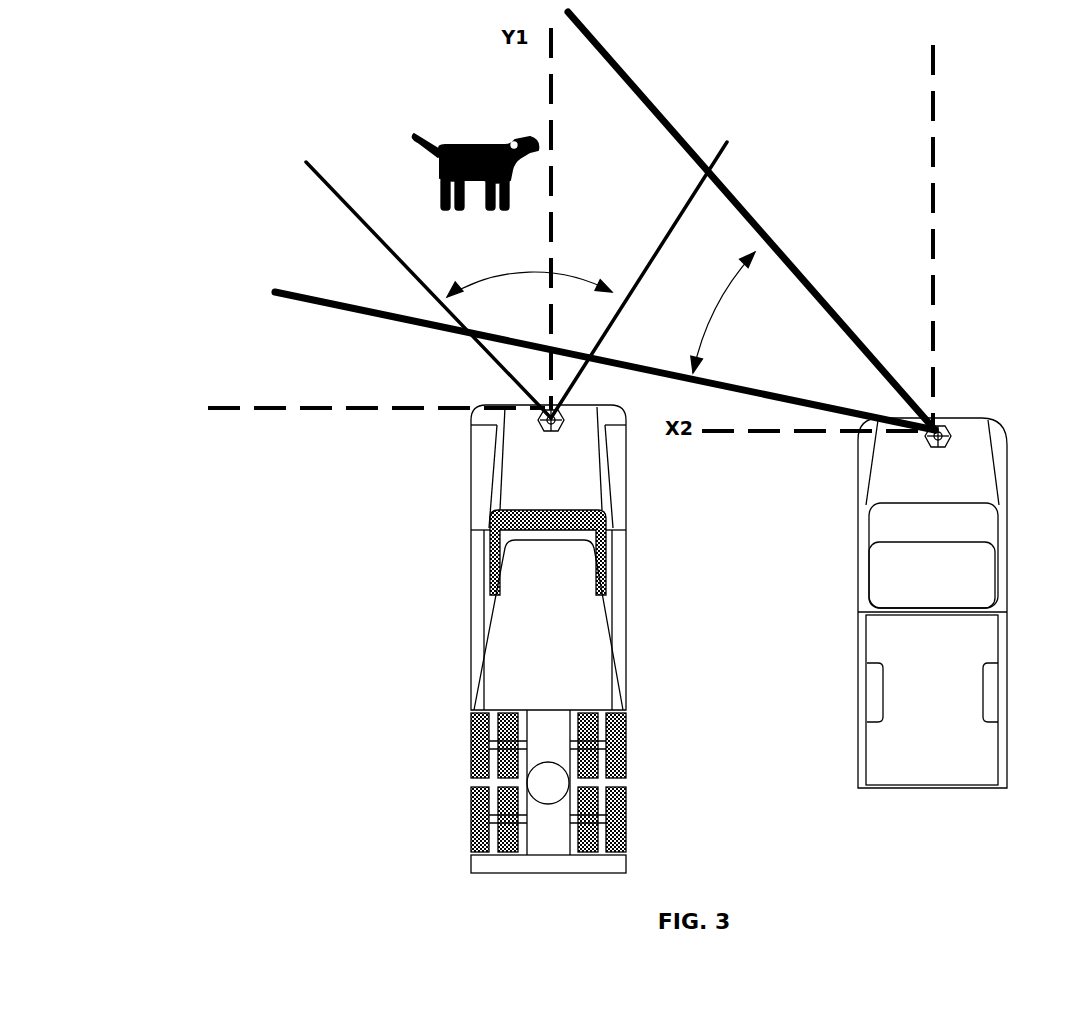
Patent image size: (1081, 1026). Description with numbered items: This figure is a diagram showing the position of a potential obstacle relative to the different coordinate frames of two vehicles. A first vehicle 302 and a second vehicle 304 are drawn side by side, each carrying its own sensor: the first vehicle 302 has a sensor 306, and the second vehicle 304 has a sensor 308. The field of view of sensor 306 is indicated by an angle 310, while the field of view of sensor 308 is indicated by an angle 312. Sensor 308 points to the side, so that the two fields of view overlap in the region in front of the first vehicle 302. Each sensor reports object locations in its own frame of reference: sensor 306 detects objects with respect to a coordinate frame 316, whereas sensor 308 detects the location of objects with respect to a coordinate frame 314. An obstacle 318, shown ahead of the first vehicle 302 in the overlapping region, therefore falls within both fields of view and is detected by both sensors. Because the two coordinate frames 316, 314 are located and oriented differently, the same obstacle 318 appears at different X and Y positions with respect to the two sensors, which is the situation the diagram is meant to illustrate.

The first vehicle 302 is at (500, 658).
The second vehicle 304 is at (890, 651).
The sensor 306 is at (540, 437).
The sensor 308 is at (932, 445).
The angle 310 is at (578, 260).
The angle 312 is at (703, 287).
The coordinate frame 314 is at (935, 290).
The coordinate frame 316 is at (315, 410).
The obstacle 318 is at (510, 142).